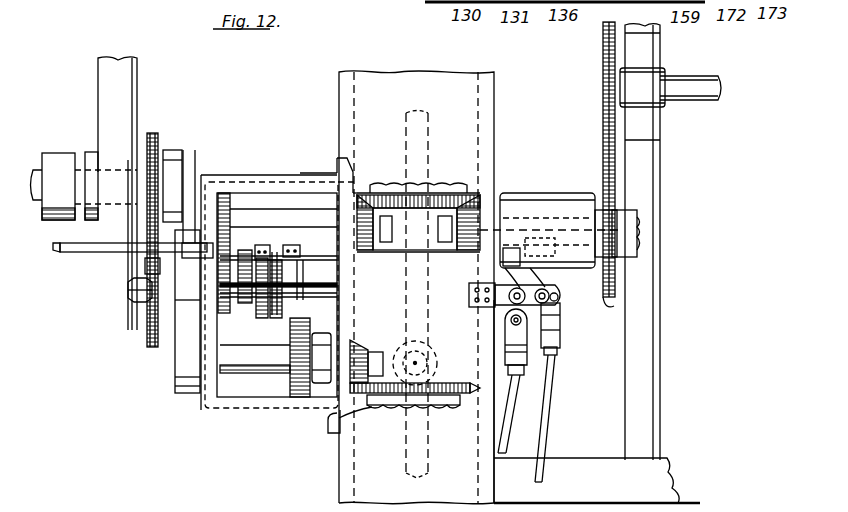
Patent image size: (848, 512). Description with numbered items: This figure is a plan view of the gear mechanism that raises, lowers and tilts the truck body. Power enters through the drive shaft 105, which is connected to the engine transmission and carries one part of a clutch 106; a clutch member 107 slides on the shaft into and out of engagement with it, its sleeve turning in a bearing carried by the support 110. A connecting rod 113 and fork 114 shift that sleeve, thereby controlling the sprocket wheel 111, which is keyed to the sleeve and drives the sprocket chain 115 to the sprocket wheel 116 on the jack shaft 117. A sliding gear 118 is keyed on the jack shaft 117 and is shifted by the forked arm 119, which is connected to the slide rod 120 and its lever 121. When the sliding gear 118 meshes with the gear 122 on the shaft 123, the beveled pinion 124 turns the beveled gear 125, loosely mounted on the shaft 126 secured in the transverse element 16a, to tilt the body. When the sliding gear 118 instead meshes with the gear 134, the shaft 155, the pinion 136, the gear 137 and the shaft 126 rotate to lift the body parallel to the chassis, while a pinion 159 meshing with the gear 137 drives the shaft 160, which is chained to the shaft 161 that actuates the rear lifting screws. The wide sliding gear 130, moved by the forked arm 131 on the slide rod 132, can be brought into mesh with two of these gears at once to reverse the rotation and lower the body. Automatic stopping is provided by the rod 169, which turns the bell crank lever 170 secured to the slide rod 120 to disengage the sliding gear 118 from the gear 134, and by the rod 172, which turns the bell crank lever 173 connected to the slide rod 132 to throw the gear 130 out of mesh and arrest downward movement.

The transverse element 16a is at (522, 98).
The drive shaft 105 is at (201, 165).
The clutch 106 is at (55, 165).
The clutch member 107 is at (85, 155).
The support 110 is at (200, 77).
The sprocket wheel 111 is at (158, 140).
The connecting rod 113 is at (100, 250).
The fork 114 is at (186, 208).
The sprocket chain 115 is at (150, 268).
The sprocket wheel 116 is at (138, 302).
The jack shaft 117 is at (332, 301).
The sliding gear 118 is at (272, 265).
The arm 119 is at (283, 256).
The slide rod 120 is at (430, 252).
The lever 121 is at (432, 356).
The gear 122 is at (297, 392).
The shaft 123 is at (255, 359).
The beveled pinion 124 is at (360, 350).
The beveled gear 125 is at (448, 392).
The shaft 126 is at (470, 294).
The sliding gear 130 is at (237, 328).
The forked arm 131 is at (338, 281).
The slide rod 132 is at (551, 241).
The gear 134 is at (228, 212).
The pinion 136 is at (380, 252).
The gear 137 is at (425, 182).
The shaft 155 is at (282, 218).
The pinion 159 is at (490, 197).
The shaft 160 is at (530, 212).
The shaft 161 is at (730, 60).
The rod 169 is at (607, 378).
The bell crank lever 170 is at (566, 303).
The rod 172 is at (505, 418).
The bell crank lever 173 is at (528, 345).